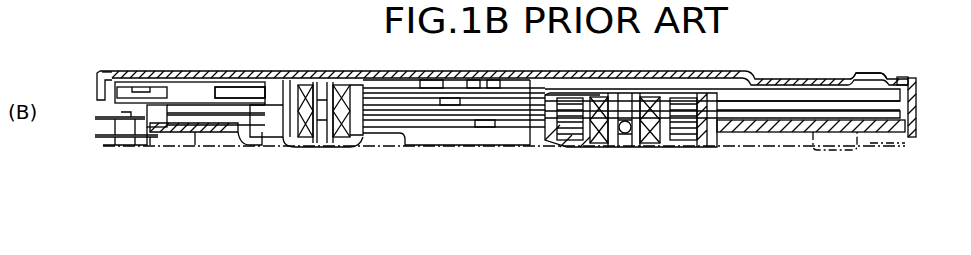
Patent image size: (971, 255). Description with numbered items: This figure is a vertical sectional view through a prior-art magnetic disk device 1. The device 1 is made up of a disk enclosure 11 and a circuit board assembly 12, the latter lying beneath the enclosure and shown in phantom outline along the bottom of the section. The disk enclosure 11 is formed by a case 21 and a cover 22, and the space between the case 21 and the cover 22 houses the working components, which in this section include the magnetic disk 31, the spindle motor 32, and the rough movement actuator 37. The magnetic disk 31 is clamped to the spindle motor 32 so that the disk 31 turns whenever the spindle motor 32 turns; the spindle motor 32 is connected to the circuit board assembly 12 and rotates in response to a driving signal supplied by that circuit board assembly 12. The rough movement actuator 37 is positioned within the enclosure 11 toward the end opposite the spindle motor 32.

The magnetic disk device 1 is at (116, 59).
The rough movement actuator 37 is at (240, 98).
The disk enclosure 11 is at (773, 83).
The cover 22 is at (865, 73).
The magnetic disk 31 is at (888, 101).
The spindle motor 32 is at (687, 150).
The circuit board assembly 12 is at (782, 152).
The case 21 is at (902, 132).